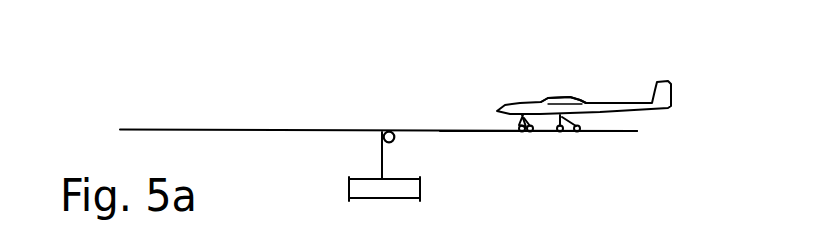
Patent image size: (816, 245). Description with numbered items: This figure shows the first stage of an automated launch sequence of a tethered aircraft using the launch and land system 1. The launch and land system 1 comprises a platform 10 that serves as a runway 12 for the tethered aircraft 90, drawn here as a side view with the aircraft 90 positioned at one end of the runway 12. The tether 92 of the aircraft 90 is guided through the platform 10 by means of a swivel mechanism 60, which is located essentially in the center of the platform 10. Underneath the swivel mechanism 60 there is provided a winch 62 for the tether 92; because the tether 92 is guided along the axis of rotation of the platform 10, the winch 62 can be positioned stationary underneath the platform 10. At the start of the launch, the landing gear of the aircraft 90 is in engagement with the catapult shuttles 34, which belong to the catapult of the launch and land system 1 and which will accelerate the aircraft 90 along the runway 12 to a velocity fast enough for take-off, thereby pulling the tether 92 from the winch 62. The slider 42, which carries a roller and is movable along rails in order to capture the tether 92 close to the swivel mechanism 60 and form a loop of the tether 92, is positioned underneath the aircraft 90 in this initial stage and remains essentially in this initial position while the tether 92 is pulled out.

The launch and land system 1 is at (126, 89).
The platform 10 is at (213, 128).
The runway 12 is at (442, 131).
The swivel mechanism 60 is at (380, 132).
The winch 62 is at (372, 188).
The tether 92 is at (382, 160).
The aircraft 90 is at (528, 108).
The catapult shuttle 34 is at (533, 130).
The slider 42 is at (579, 130).